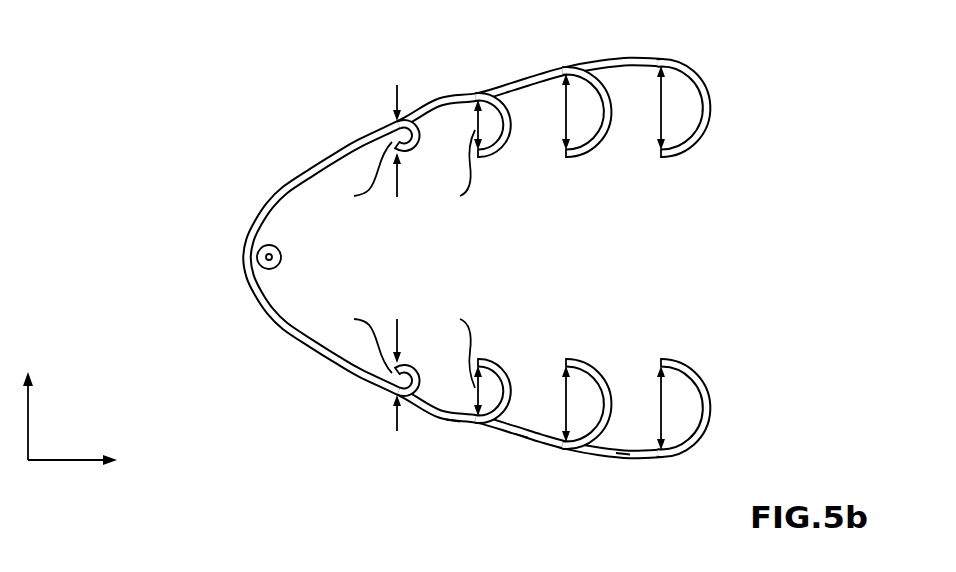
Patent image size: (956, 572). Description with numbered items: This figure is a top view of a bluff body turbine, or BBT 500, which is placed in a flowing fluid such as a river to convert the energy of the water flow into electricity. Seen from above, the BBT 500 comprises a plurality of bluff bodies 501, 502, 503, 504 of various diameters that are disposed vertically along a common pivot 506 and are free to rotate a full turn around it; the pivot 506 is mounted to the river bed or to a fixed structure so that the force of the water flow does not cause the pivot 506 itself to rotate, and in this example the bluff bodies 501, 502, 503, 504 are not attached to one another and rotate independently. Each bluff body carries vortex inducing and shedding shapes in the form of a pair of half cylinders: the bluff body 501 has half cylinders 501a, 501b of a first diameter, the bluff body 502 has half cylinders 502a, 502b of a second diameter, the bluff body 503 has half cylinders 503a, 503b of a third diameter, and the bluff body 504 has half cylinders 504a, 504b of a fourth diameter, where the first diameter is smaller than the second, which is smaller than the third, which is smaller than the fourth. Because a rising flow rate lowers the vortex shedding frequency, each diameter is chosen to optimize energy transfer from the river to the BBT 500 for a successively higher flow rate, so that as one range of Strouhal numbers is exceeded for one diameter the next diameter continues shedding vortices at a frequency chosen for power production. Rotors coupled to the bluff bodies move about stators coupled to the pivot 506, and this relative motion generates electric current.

The bluff body turbine (BBT) 500 is at (292, 36).
The bluff body 501 is at (328, 360).
The half cylinder 501a is at (453, 419).
The half cylinder 501b is at (417, 132).
The bluff body 502 is at (421, 393).
The half cylinder 502a is at (509, 427).
The half cylinder 502b is at (502, 91).
The bluff body 503 is at (521, 426).
The half cylinder 503a is at (604, 434).
The half cylinder 503b is at (607, 88).
The bluff body 504 is at (623, 447).
The half cylinder 504a is at (712, 412).
The half cylinder 504b is at (709, 93).
The pivot 506 is at (265, 256).